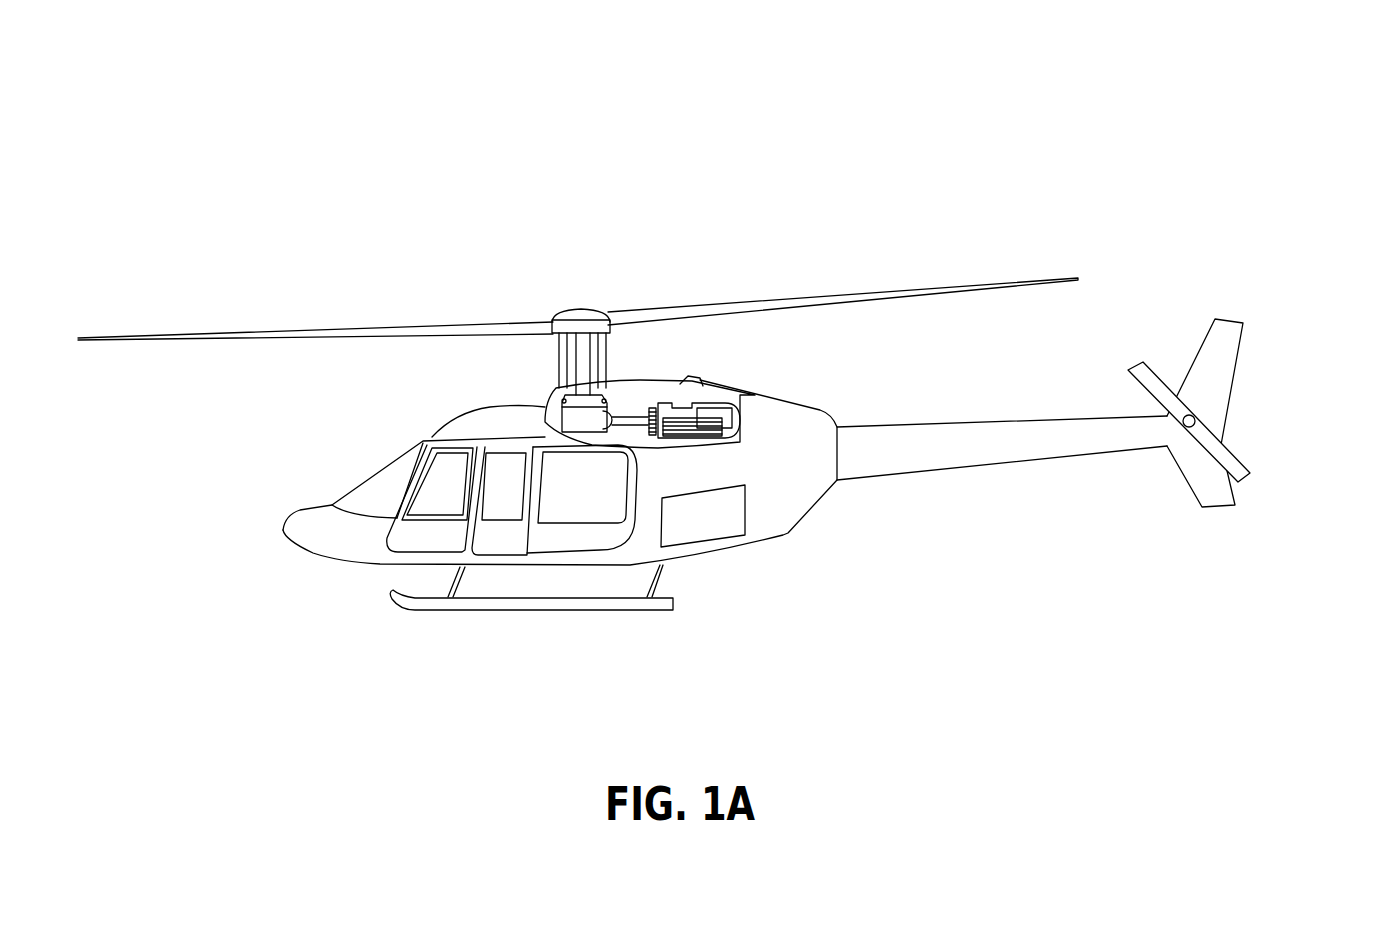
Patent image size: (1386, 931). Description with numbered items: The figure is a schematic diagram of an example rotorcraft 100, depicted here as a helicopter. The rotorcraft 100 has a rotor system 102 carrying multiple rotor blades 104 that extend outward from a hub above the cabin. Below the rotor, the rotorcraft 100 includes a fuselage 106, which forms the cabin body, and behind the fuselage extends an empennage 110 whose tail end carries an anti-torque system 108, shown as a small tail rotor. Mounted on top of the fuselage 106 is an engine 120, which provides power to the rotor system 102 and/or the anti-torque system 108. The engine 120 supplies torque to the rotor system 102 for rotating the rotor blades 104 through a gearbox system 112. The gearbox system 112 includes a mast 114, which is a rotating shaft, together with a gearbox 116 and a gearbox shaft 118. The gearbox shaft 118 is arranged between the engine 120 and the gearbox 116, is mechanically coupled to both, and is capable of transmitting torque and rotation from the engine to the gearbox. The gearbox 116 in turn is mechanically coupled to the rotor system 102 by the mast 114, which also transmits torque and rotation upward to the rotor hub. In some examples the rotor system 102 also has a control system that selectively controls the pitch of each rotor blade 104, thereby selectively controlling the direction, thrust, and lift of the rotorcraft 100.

The rotorcraft 100 is at (172, 125).
The rotor system 102 is at (607, 267).
The rotor blades 104 is at (987, 285).
The fuselage 106 is at (373, 563).
The anti-torque system 108 is at (1266, 492).
The empennage 110 is at (962, 467).
The gearbox system 112 is at (537, 350).
The mast 114 is at (587, 365).
The gearbox 116 is at (562, 408).
The gearbox shaft 118 is at (633, 416).
The engine 120 is at (727, 400).